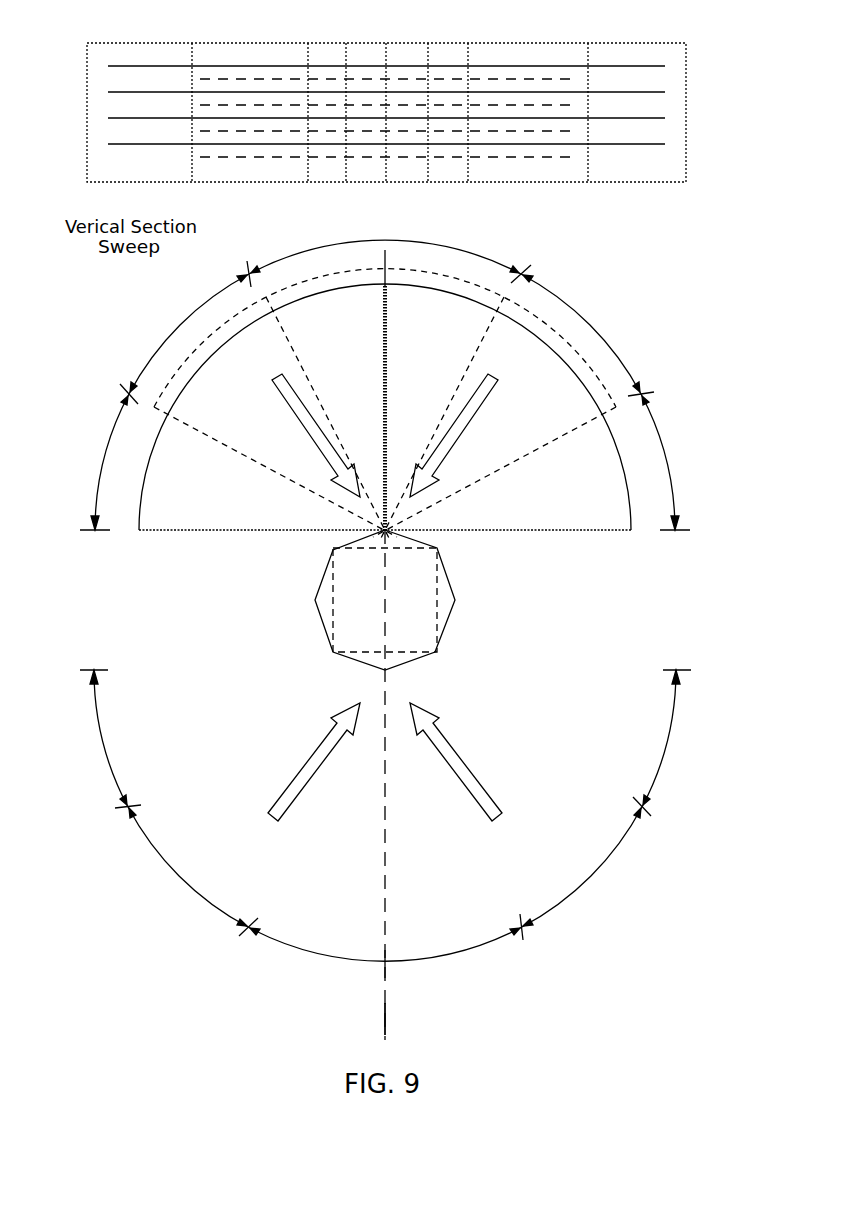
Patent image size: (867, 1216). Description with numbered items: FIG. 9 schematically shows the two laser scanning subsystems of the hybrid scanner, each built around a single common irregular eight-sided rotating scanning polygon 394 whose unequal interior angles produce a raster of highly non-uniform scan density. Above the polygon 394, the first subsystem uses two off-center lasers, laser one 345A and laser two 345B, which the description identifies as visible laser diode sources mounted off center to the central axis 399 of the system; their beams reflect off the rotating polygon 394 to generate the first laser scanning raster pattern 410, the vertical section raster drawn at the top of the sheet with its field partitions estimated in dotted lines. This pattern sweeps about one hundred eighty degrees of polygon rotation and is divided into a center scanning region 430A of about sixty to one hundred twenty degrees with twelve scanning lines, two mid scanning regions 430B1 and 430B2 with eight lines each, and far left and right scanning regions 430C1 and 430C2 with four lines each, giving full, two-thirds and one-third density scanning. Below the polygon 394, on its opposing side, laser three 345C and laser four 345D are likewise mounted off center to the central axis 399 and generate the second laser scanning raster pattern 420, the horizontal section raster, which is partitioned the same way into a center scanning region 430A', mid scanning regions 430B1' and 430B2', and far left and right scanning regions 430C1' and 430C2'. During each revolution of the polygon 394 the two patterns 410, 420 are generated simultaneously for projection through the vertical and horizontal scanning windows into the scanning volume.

The first laser scanning raster pattern 410 is at (383, 97).
The center scanning region 430A is at (385, 245).
The mid scanning region 430B1 is at (189, 327).
The mid scanning region 430B2 is at (585, 329).
The far left scanning region 430C1 is at (90, 456).
The far right scanning region 430C2 is at (682, 456).
The laser 1 345A is at (275, 419).
The laser 2 345B is at (494, 419).
The irregular rotating polygon 394 is at (448, 627).
The far left scanning region 430C1' is at (90, 744).
The far right scanning region 430C2' is at (686, 744).
The mid scanning region 430B1' is at (187, 871).
The mid scanning region 430B2' is at (582, 873).
The center scanning region 430A' is at (385, 959).
The laser 3 345C is at (286, 762).
The laser 4 345D is at (484, 762).
The second laser scanning raster pattern 420 is at (241, 858).
The central axis 399 is at (387, 1015).